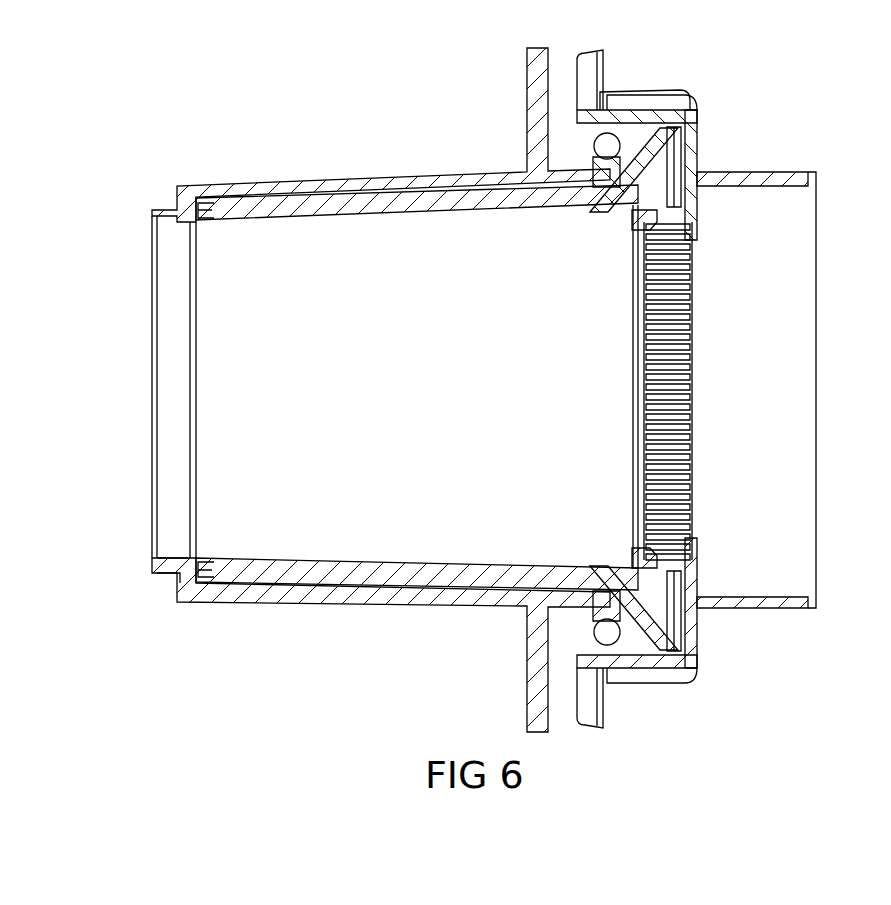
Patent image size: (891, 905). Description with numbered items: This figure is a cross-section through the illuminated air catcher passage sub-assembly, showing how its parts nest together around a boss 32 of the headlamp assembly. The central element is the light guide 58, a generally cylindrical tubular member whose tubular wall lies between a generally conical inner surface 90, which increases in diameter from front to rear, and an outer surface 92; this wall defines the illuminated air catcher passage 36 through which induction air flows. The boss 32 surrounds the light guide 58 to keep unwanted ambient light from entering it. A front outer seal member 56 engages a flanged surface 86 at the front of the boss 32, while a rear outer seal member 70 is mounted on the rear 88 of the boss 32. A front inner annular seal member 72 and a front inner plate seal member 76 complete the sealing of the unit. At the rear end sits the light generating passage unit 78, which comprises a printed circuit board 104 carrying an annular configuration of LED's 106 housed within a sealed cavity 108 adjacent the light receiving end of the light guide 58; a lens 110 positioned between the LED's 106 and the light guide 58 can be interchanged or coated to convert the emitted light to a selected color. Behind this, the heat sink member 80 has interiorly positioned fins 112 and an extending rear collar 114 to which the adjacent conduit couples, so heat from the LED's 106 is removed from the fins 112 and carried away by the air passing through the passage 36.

The boss 32 is at (245, 595).
The illuminated air catcher passage 36 is at (170, 560).
The front outer seal member 56 is at (205, 585).
The light guide 58 is at (405, 590).
The rear outer seal member 70 is at (607, 628).
The front inner annular seal member 72 is at (640, 572).
The front inner plate seal member 76 is at (677, 652).
The light generating passage unit 78 is at (690, 632).
The heat sink member 80 is at (667, 389).
The flanged surface 86 is at (180, 578).
The rear of boss 88 is at (600, 606).
The inner surface 90 is at (430, 565).
The outer surface 92 is at (338, 600).
The printed circuit board 104 is at (690, 615).
The LED's 106 is at (688, 580).
The sealed cavity 108 is at (695, 543).
The lens 110 is at (657, 673).
The fins 112 is at (700, 330).
The rear collar 114 is at (770, 172).